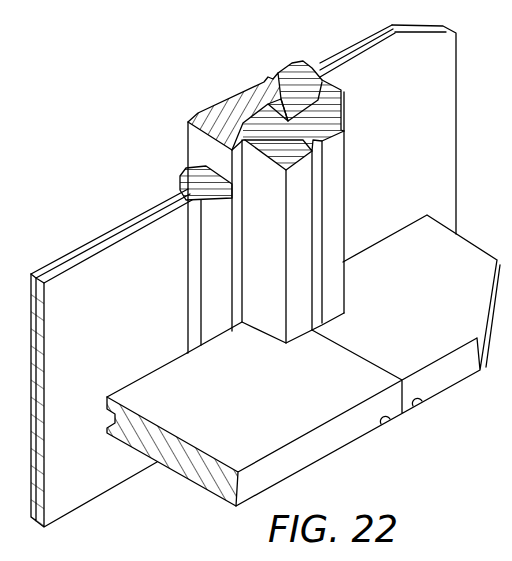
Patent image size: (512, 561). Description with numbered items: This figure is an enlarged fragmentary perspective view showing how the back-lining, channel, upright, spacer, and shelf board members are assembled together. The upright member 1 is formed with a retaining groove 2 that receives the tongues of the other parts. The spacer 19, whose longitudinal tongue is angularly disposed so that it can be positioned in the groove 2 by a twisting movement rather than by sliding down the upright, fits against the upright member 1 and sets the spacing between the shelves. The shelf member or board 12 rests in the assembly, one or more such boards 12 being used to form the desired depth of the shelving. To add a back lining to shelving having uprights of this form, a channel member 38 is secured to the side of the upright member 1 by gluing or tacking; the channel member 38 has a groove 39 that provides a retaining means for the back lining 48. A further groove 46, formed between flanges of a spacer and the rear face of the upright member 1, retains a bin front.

The upright member 1 is at (222, 123).
The retaining groove 2 is at (280, 115).
The shelf member or board 12 is at (195, 468).
The spacer 19 is at (330, 218).
The channel member 38 is at (297, 80).
The groove of the channel member 39 is at (165, 186).
The groove 46 is at (68, 470).
The back lining 48 is at (423, 122).